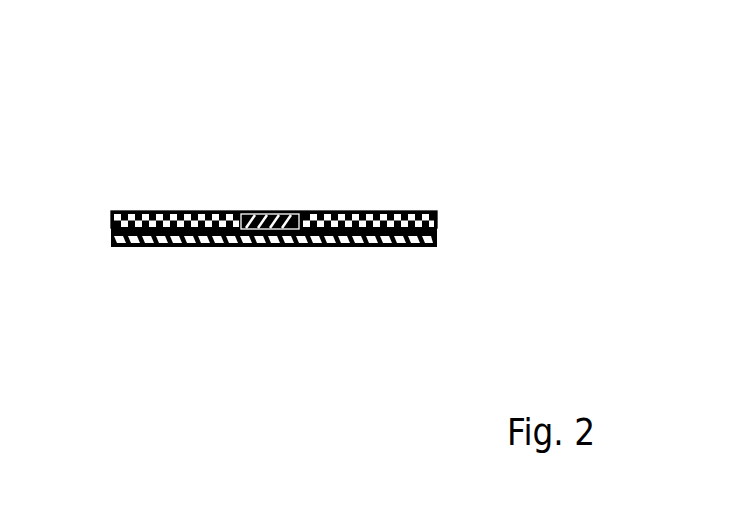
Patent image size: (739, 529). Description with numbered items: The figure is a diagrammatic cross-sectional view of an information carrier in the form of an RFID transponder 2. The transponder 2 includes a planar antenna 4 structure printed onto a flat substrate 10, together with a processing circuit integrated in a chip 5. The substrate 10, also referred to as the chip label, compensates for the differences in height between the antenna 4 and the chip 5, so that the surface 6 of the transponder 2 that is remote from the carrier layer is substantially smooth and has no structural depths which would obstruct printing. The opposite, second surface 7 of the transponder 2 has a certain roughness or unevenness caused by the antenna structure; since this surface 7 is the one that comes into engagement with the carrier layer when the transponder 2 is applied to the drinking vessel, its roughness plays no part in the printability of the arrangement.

The transponder 2 is at (330, 128).
The substrate 10 is at (140, 222).
The surface 6 is at (330, 212).
The chip 5 is at (270, 243).
The antenna 4 is at (200, 245).
The second surface 7 is at (389, 250).